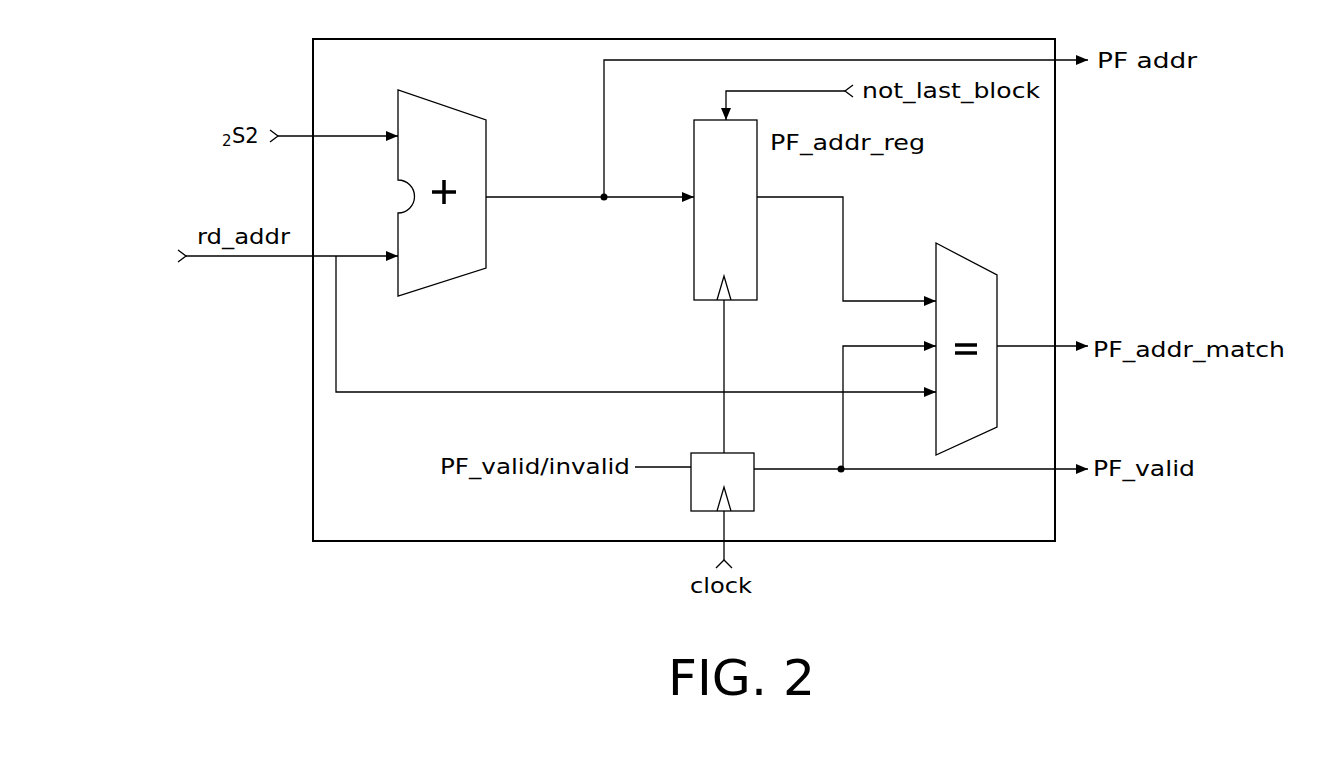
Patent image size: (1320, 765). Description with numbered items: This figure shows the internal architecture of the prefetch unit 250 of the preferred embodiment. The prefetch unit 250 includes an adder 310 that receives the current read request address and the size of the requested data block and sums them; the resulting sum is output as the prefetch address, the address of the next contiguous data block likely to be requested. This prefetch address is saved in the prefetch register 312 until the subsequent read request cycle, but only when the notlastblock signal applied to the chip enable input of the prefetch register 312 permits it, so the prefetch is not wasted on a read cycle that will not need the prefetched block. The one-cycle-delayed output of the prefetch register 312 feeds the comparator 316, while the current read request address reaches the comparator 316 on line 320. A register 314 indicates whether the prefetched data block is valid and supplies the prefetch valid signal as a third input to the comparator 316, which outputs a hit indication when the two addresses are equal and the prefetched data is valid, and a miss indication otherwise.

The prefetch unit 250 is at (437, 541).
The adder 310 is at (453, 109).
The prefetch register 312 is at (694, 229).
The register 314 is at (757, 492).
The comparator 316 is at (958, 254).
The line 320 is at (572, 392).